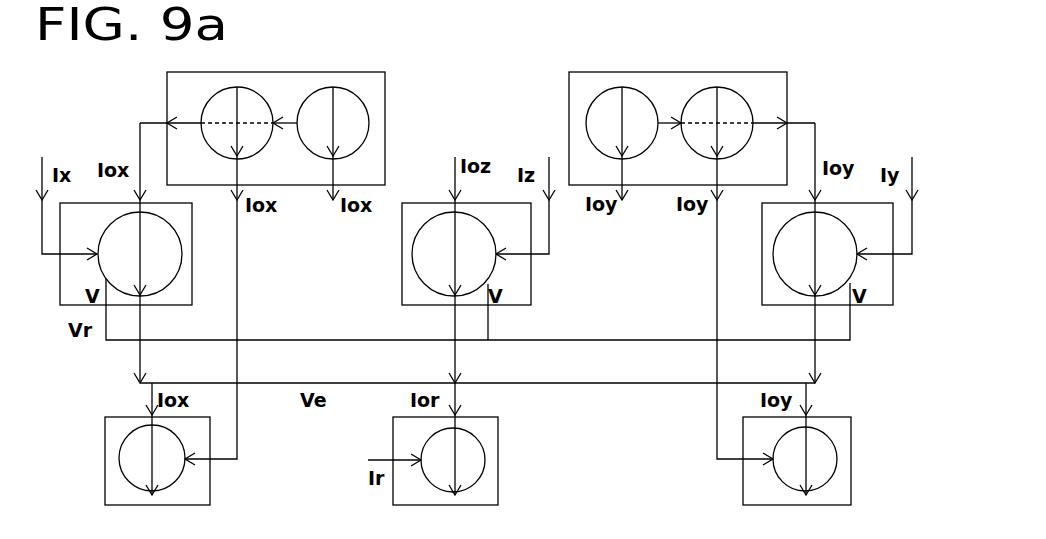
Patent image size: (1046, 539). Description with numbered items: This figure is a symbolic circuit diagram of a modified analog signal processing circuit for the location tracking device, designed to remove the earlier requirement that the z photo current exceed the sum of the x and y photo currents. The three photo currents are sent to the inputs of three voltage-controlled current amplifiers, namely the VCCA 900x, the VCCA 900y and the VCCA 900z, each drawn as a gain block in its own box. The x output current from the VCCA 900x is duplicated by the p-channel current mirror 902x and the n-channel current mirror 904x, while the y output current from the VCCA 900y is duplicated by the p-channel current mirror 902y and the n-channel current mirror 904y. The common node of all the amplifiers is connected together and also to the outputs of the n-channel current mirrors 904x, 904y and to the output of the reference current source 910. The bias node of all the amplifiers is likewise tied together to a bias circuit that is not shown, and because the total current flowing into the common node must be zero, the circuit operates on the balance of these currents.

The p-channel current mirror 902x is at (368, 89).
The p-channel current mirror 902y is at (652, 80).
The VCCA 900x is at (182, 254).
The VCCA 900z is at (515, 278).
The VCCA 900y is at (768, 278).
The n-channel current mirror 904x is at (200, 478).
The reference current source 910 is at (488, 435).
The n-channel current mirror 904y is at (750, 493).